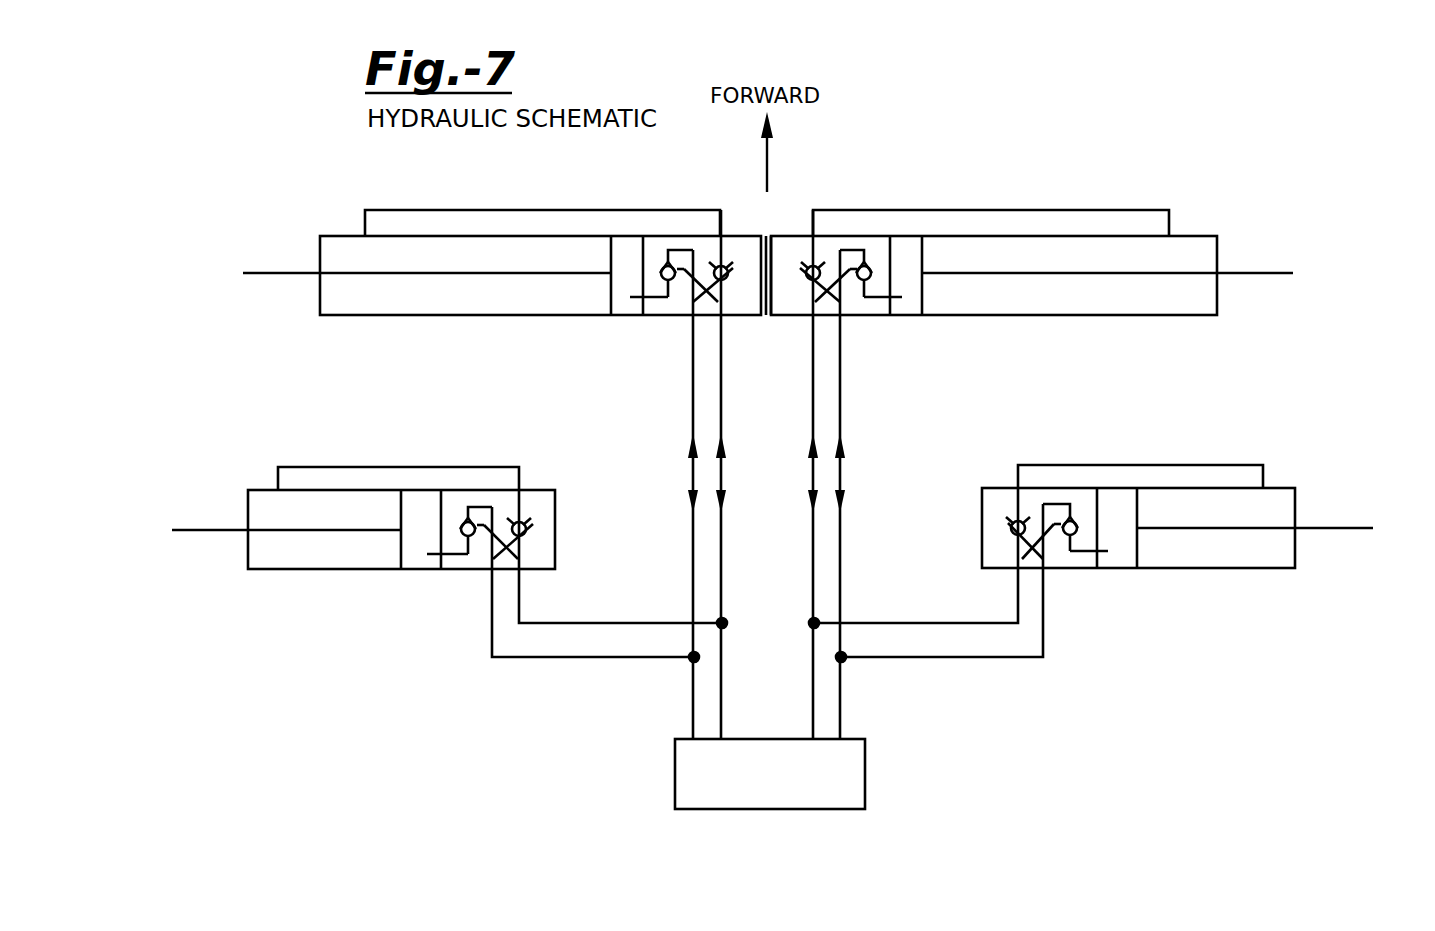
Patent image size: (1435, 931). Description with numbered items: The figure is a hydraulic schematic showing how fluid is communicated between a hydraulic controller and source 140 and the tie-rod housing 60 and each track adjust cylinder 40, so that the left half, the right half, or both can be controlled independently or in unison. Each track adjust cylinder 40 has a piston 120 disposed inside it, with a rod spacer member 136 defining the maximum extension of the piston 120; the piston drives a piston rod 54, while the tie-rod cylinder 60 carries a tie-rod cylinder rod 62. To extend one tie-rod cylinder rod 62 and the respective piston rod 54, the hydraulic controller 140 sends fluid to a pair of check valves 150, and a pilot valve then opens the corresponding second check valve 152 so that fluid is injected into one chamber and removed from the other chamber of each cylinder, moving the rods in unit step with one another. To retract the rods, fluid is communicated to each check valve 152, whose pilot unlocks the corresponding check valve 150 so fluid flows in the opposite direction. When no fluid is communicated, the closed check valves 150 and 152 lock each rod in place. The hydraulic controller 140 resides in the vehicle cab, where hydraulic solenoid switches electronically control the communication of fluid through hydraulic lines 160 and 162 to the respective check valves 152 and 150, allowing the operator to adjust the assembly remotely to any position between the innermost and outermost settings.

The track adjust cylinder 40 is at (318, 571).
The piston rod 54 is at (200, 531).
The tie-rod housing 60 is at (749, 236).
The tie-rod cylinder rod 62 is at (277, 273).
The piston 120 is at (612, 290).
The rod spacer member 136 is at (640, 278).
The hydraulic controller and source 140 is at (838, 810).
The check valve 150 is at (1013, 533).
The second check valve 152 is at (665, 262).
The hydraulic line 160 is at (697, 713).
The hydraulic line 162 is at (722, 677).